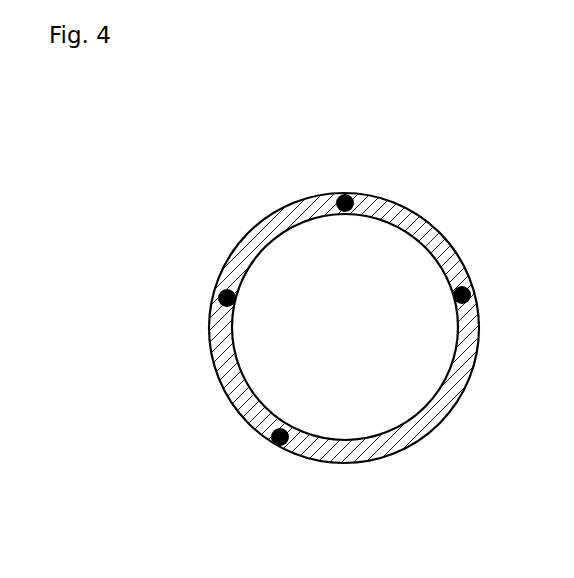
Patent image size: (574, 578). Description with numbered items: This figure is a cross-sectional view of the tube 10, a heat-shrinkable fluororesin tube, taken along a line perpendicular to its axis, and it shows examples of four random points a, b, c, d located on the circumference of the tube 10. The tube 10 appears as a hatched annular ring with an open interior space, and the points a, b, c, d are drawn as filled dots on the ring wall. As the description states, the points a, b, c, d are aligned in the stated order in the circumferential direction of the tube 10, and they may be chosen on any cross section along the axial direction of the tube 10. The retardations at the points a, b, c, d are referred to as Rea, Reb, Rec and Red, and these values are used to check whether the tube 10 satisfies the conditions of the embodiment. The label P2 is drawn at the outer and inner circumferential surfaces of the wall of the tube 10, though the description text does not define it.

The tube 10 is at (346, 343).
The peripheral surface / pressing position P2 is at (427, 207).
The point a is at (347, 192).
The point b is at (471, 294).
The point c is at (274, 446).
The point d is at (218, 297).